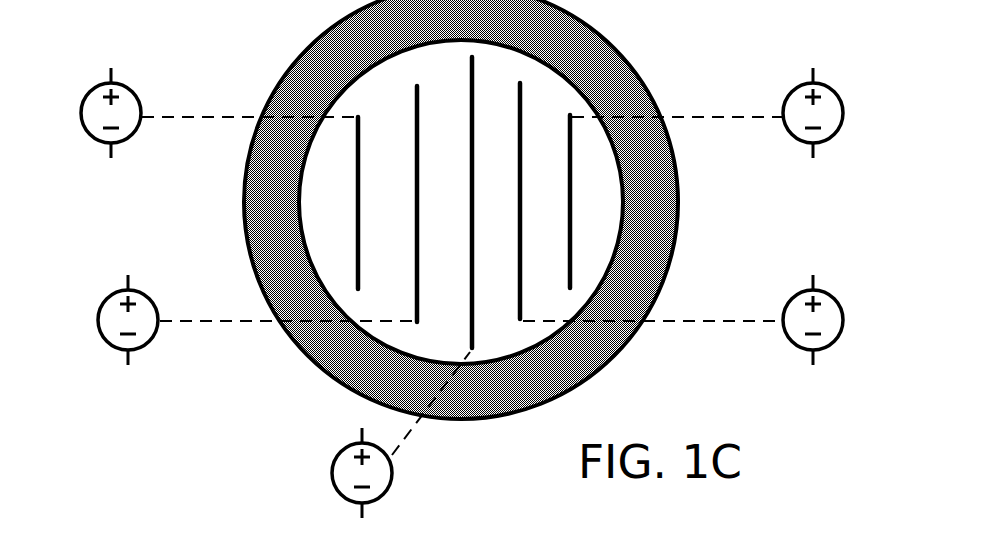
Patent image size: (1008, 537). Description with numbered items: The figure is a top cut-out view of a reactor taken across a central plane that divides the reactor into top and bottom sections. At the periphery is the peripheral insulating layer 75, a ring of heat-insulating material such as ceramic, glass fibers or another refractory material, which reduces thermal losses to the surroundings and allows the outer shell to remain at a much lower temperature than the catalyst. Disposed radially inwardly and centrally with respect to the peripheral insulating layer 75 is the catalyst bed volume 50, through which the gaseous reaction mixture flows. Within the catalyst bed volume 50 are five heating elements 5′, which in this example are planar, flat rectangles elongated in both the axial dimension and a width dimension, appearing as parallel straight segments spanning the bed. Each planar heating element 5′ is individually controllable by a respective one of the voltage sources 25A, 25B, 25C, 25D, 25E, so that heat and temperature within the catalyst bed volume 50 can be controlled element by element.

The peripheral insulating layer 75 is at (662, 213).
The catalyst bed volume 50 is at (403, 151).
The heating elements 5′ is at (355, 214).
The voltage source 25A is at (81, 114).
The voltage source 25B is at (97, 320).
The voltage source 25C is at (331, 474).
The voltage source 25D is at (845, 321).
The voltage source 25E is at (845, 115).